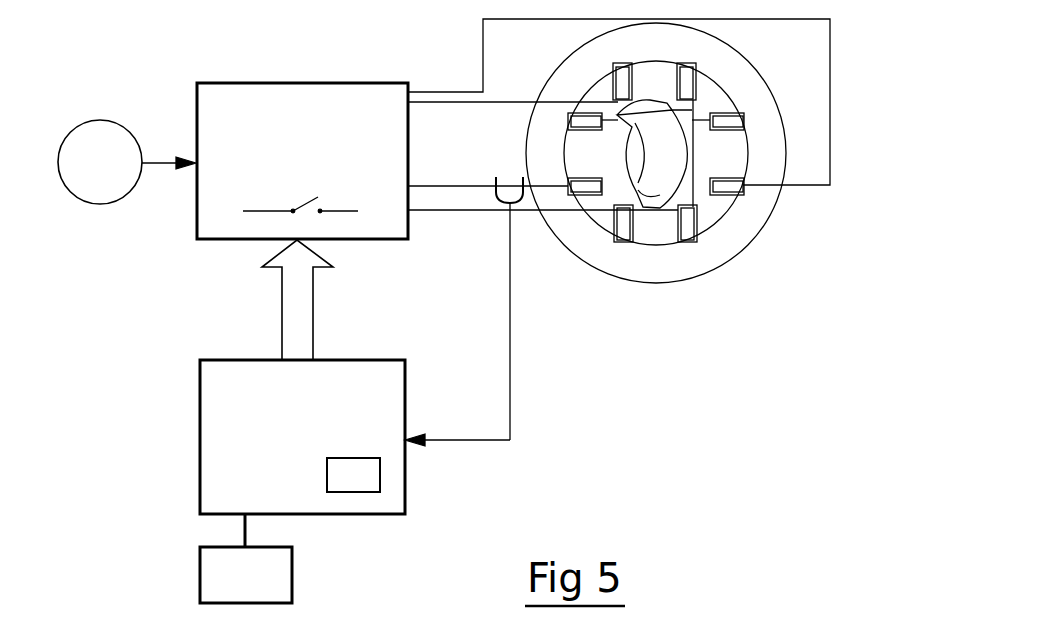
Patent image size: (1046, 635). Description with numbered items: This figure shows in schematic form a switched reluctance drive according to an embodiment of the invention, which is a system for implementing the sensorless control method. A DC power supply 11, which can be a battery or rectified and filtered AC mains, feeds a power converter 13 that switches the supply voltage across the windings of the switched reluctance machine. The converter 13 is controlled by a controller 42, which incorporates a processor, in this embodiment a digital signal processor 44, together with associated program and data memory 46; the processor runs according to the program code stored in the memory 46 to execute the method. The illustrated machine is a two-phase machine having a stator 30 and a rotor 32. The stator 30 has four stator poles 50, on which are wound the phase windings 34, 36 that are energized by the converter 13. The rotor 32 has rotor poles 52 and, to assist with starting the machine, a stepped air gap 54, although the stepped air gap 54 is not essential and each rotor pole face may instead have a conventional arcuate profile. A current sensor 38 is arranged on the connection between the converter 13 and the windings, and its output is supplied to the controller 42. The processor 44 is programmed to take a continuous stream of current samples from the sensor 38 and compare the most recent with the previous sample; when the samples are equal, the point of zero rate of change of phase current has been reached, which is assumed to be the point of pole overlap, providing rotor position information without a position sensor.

The DC power supply 11 is at (98, 118).
The power converter 13 is at (243, 80).
The stator 30 is at (565, 72).
The rotor 32 is at (677, 158).
The phase winding 34 is at (717, 187).
The phase winding 36 is at (625, 227).
The current sensor 38 is at (512, 210).
The controller 42 is at (195, 382).
The digital signal processor 44 is at (333, 482).
The program and data memory 46 is at (293, 563).
The stator poles 50 is at (641, 85).
The rotor poles 52 is at (640, 196).
The stepped air gap 54 is at (697, 107).